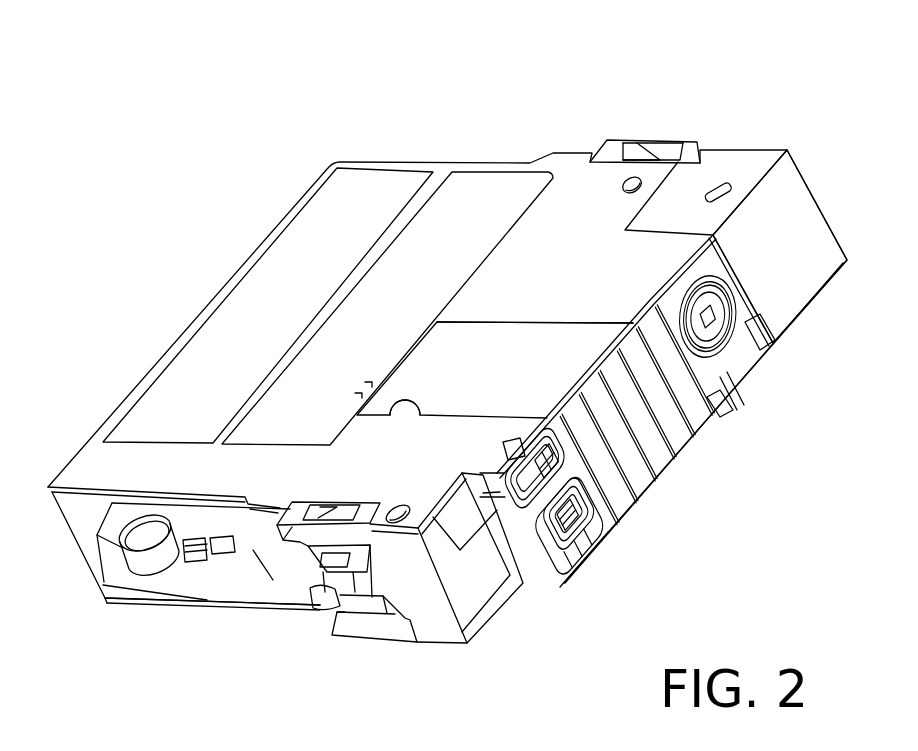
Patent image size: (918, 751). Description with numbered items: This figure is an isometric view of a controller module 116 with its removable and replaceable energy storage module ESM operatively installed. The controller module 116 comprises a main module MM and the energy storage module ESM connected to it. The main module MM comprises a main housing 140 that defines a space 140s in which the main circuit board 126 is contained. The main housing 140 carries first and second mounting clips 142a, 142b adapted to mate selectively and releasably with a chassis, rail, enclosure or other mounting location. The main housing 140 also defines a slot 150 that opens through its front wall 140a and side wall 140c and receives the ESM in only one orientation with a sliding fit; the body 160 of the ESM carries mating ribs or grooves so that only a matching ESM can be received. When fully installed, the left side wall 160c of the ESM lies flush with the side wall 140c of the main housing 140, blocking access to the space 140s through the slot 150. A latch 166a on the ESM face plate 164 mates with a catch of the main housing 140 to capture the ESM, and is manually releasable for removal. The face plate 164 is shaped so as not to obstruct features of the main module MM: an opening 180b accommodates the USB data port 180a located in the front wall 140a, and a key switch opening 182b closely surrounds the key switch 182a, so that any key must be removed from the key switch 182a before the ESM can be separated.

The controller module 116 is at (488, 140).
The main circuit board 126 is at (228, 571).
The main housing 140 is at (258, 314).
The front wall 140a is at (800, 290).
The side wall 140c is at (470, 305).
The space 140s is at (210, 598).
The first mounting clip 142a is at (621, 140).
The second mounting clip 142b is at (332, 622).
The slot 150 is at (400, 416).
The body 160 is at (441, 363).
The left side wall 160c is at (539, 397).
The face plate 164 is at (680, 440).
The latch 166a is at (567, 452).
The USB data port 180a is at (525, 590).
The opening 180b is at (590, 560).
The key switch 182a is at (720, 310).
The key switch opening 182b is at (688, 285).
The main module MM is at (376, 196).
The energy storage module ESM is at (490, 347).